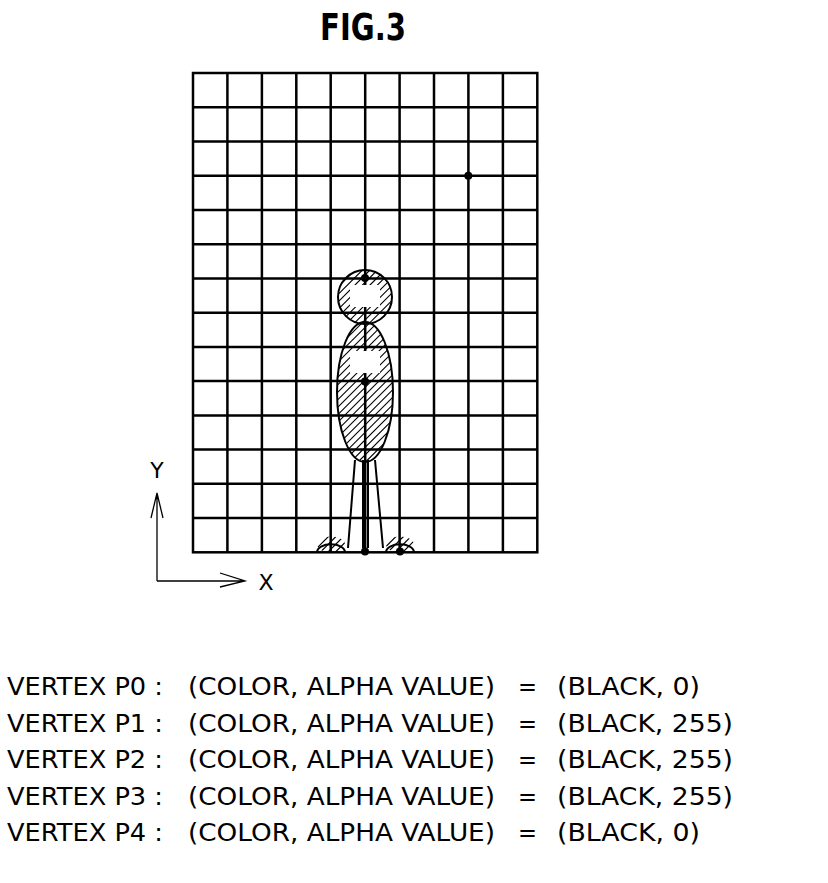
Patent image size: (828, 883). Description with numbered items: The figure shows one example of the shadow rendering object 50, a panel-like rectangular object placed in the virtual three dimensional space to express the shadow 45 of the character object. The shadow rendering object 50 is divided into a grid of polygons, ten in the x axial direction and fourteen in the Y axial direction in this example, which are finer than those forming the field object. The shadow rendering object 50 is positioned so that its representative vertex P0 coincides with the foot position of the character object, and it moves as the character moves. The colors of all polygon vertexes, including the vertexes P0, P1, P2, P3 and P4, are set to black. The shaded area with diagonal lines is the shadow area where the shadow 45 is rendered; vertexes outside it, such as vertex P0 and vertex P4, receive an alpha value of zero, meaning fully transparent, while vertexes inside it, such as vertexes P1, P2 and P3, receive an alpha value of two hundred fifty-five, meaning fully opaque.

The shadow rendering object 50 is at (195, 330).
The shadow 45 is at (365, 367).
The representative vertex P0 is at (366, 569).
The vertex P1 is at (413, 569).
The vertex P2 is at (364, 367).
The vertex P3 is at (364, 292).
The vertex P4 is at (467, 163).